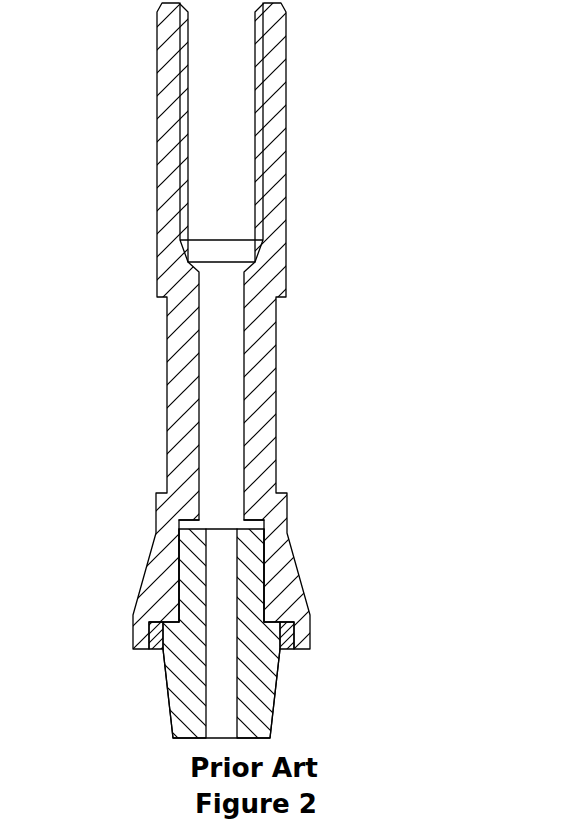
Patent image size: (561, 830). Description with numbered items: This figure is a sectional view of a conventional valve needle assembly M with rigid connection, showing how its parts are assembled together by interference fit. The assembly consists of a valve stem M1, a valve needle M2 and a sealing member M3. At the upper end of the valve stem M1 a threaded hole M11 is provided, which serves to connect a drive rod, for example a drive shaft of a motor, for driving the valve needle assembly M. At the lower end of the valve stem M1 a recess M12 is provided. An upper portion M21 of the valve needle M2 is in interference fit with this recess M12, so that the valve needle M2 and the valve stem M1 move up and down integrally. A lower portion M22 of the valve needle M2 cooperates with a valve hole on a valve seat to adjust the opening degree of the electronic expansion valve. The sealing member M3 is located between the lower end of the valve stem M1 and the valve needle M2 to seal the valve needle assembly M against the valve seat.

The valve needle assembly M is at (256, 370).
The valve stem M1 is at (265, 326).
The threaded hole M11 is at (229, 56).
The recess M12 is at (260, 520).
The valve needle M2 is at (220, 633).
The upper portion of the valve needle M21 is at (257, 575).
The lower portion of the valve needle M22 is at (187, 698).
The sealing member M3 is at (145, 644).